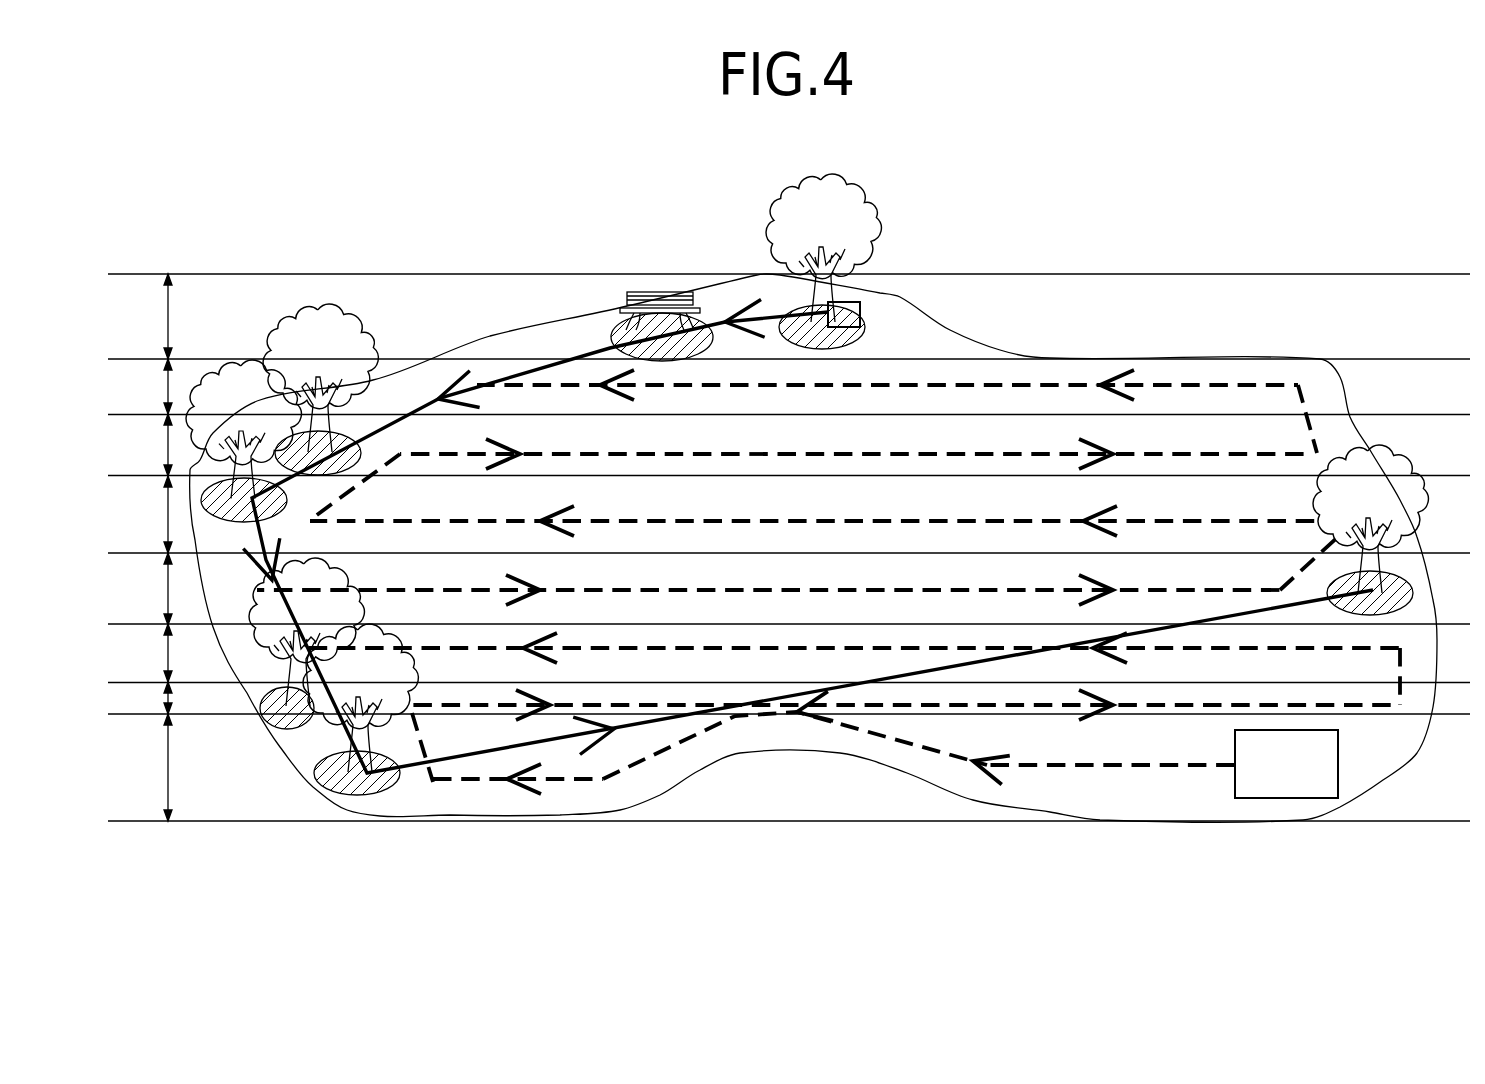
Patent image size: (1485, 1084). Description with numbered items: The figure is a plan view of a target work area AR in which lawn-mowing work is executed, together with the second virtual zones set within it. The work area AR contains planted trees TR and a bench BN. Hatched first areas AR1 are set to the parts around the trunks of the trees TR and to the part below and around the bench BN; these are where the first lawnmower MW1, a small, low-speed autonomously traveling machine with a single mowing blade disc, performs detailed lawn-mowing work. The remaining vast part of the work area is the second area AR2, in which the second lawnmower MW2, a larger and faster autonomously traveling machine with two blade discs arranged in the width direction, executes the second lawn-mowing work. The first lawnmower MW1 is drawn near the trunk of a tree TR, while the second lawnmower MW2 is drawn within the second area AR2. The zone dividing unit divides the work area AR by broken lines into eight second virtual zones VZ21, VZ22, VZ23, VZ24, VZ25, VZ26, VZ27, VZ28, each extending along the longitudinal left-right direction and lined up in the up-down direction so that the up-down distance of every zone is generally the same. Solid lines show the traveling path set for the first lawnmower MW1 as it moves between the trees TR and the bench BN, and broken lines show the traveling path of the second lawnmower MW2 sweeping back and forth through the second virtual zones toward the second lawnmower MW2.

The work area AR is at (543, 323).
The first area AR1 is at (607, 337).
The second area AR2 is at (805, 570).
The bench BN is at (650, 290).
The tree TR is at (838, 203).
The first lawnmower MW1 is at (862, 304).
The second lawnmower MW2 is at (1338, 762).
The second virtual zone VZ21 is at (785, 316).
The second virtual zone VZ22 is at (785, 386).
The second virtual zone VZ23 is at (785, 445).
The second virtual zone VZ24 is at (785, 515).
The second virtual zone VZ25 is at (785, 589).
The second virtual zone VZ26 is at (785, 653).
The second virtual zone VZ27 is at (785, 698).
The second virtual zone VZ28 is at (785, 767).